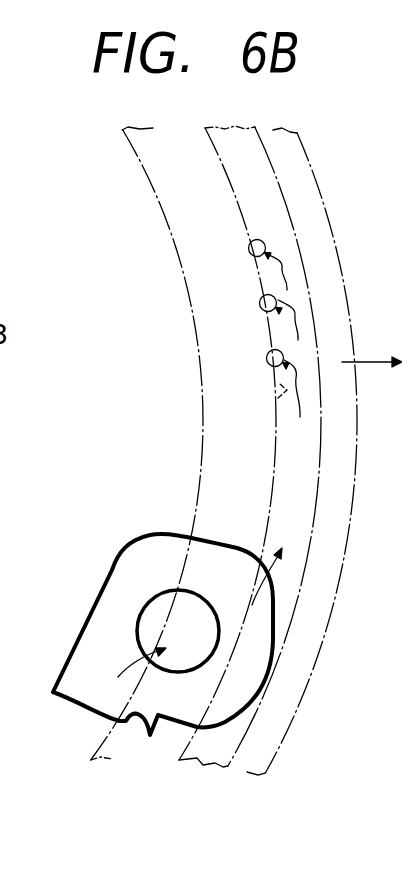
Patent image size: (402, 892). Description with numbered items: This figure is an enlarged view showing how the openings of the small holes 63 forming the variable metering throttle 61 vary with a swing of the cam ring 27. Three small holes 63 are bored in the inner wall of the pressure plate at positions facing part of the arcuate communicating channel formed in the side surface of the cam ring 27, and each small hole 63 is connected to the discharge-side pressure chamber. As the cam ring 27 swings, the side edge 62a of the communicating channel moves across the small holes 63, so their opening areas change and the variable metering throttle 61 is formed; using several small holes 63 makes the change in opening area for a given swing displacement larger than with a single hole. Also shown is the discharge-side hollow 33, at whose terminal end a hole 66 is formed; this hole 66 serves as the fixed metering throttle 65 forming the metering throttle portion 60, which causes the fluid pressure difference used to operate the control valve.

The cam ring 27 is at (287, 145).
The variable metering throttle 61 is at (299, 281).
The metering throttle portion 60 is at (305, 462).
The small hole 63 is at (250, 243).
The side edge of communicating channel 62a is at (278, 398).
The hole 66 is at (160, 602).
The fixed metering throttle 65 is at (128, 645).
The discharge-side hollow 33 is at (126, 722).